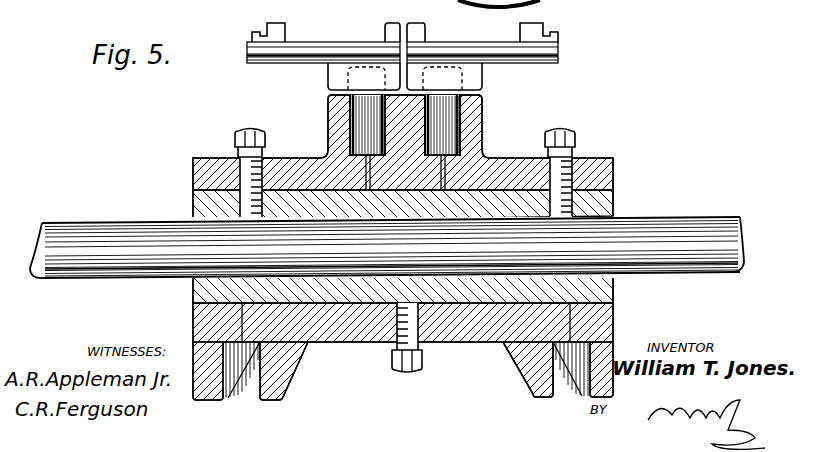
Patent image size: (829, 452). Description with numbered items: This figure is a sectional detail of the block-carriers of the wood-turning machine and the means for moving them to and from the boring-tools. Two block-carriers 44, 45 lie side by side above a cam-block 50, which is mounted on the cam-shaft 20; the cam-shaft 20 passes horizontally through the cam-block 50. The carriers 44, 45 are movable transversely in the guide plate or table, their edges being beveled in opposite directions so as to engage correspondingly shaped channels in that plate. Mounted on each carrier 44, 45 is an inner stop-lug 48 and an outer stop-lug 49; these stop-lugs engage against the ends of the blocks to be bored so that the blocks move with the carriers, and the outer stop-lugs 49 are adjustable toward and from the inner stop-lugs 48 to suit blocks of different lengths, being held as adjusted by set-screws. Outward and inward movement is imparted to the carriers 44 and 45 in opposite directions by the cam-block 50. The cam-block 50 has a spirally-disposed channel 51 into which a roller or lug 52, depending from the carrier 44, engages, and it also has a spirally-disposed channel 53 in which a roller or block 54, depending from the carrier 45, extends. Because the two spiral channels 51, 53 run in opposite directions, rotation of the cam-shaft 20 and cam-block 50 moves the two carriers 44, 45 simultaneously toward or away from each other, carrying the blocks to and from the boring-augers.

The cam-shaft 20 is at (712, 217).
The block-carrier 44 is at (332, 46).
The block-carrier 45 is at (482, 42).
The inner stop-lug 48 is at (420, 27).
The outer stop-lug 49 is at (539, 24).
The cam-block 50 is at (482, 150).
The spirally-disposed channel 51 is at (330, 152).
The roller or lug 52 is at (363, 113).
The spirally-disposed channel 53 is at (490, 157).
The roller or block 54 is at (440, 118).